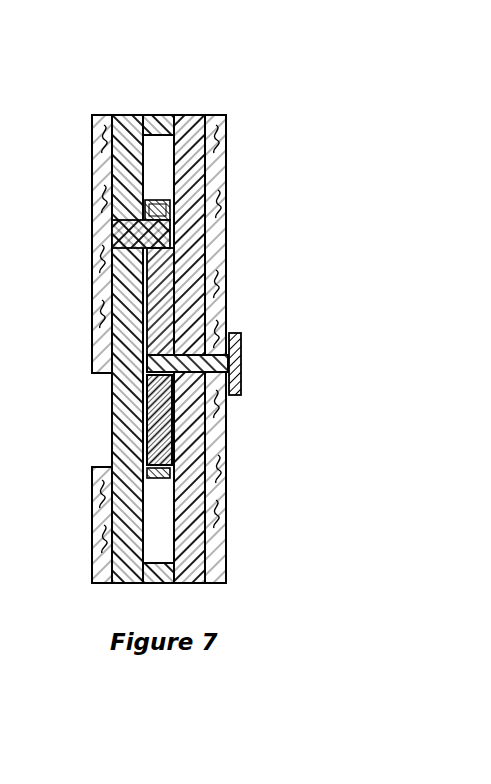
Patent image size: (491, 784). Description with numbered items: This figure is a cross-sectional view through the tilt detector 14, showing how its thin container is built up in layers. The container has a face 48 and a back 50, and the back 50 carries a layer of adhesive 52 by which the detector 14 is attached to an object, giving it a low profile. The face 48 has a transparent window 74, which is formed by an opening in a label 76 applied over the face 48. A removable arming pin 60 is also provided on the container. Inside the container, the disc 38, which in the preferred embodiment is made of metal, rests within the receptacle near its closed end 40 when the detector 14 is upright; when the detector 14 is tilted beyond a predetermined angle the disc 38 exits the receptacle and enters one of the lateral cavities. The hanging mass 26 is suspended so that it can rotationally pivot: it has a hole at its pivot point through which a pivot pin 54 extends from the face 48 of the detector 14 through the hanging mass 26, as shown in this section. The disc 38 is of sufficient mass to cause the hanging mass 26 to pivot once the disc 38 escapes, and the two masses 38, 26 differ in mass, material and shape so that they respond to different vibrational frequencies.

The tilt detector 14 is at (242, 101).
The hanging mass 26 is at (152, 210).
The disc 38 is at (160, 425).
The closed end 40 is at (165, 472).
The face 48 is at (135, 280).
The back 50 is at (174, 115).
The layer of adhesive 52 is at (215, 115).
The pivot pin 54 is at (170, 223).
The removable arming pin 60 is at (236, 335).
The transparent window 74 is at (100, 423).
The label 76 is at (103, 532).